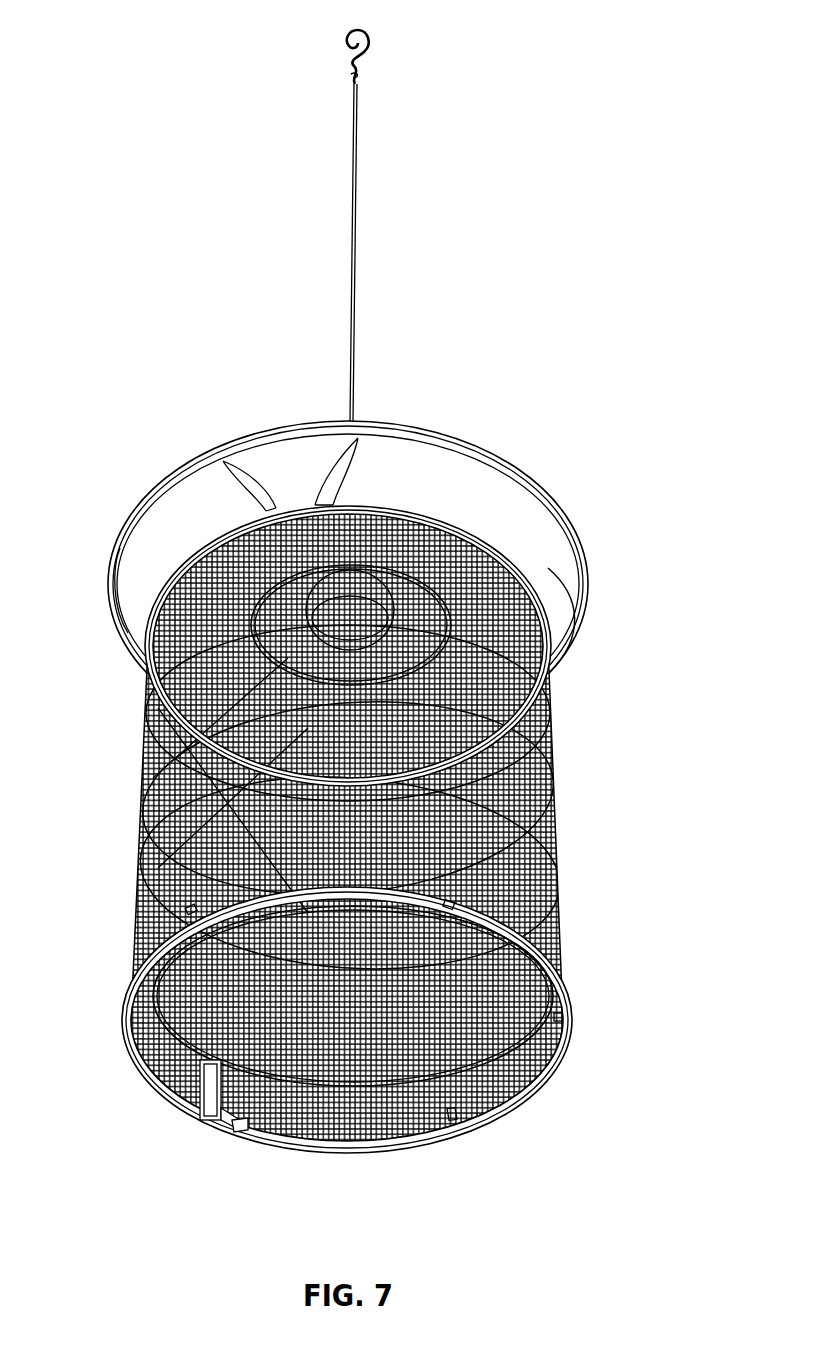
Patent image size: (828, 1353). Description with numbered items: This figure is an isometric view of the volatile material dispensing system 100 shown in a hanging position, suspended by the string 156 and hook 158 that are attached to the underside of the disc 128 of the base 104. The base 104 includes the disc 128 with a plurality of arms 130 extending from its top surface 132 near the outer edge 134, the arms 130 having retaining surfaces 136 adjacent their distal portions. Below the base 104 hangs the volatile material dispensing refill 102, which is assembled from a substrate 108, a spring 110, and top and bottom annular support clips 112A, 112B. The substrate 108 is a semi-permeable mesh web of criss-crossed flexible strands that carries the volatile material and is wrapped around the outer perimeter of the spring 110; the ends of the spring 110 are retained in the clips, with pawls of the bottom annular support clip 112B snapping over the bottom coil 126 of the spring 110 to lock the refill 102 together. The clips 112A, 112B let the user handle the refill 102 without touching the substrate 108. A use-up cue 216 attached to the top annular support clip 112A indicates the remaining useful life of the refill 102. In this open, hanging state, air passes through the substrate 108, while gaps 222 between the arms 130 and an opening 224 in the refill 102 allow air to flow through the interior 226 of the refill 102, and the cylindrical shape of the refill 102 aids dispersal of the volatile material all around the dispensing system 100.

The volatile material dispensing system 100 is at (560, 300).
The volatile material dispensing refill 102 is at (572, 816).
The base 104 is at (369, 579).
The substrate 108 is at (389, 996).
The spring 110 is at (403, 1087).
The top annular support clip 112A is at (535, 1067).
The bottom annular support clip 112B is at (527, 578).
The bottom coil 126 is at (463, 537).
The disc 128 is at (198, 485).
The arms 130 is at (255, 460).
The top surface 132 is at (125, 593).
The outer edge 134 is at (545, 490).
The retaining surfaces 136 is at (272, 503).
The string 156 is at (350, 232).
The hook 158 is at (362, 32).
The use-up cue 216 is at (202, 1073).
The gaps 222 is at (398, 482).
The opening 224 is at (308, 1078).
The interior 226 is at (368, 1046).